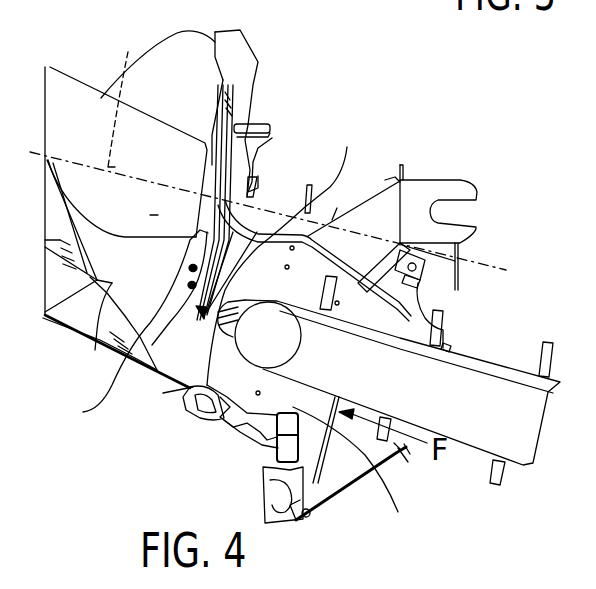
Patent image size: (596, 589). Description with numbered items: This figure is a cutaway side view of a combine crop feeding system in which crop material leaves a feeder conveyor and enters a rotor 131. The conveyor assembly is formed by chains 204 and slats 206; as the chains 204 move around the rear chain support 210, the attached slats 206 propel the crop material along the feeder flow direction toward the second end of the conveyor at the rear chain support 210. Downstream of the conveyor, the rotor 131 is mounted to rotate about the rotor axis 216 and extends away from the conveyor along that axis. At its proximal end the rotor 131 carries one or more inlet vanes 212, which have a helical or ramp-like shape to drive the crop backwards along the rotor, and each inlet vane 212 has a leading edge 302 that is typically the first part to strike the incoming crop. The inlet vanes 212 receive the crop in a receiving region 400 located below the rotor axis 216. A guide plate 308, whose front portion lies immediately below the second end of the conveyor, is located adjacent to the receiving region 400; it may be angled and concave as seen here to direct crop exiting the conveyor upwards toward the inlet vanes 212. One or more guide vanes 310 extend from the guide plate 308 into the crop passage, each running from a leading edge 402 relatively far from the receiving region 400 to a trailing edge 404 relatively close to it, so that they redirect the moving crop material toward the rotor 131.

The rotor 131 is at (56, 92).
The rotor axis 216 is at (125, 92).
The inlet vanes 212 is at (180, 52).
The leading edge 302 is at (240, 129).
The receiving region 400 is at (342, 248).
The rear chain support 210 is at (296, 348).
The slats 206 is at (541, 352).
The chains 204 is at (560, 387).
The leading edge 402 is at (360, 468).
The trailing edge 404 is at (190, 388).
The guide vanes 310 is at (217, 400).
The guide plate 308 is at (253, 425).